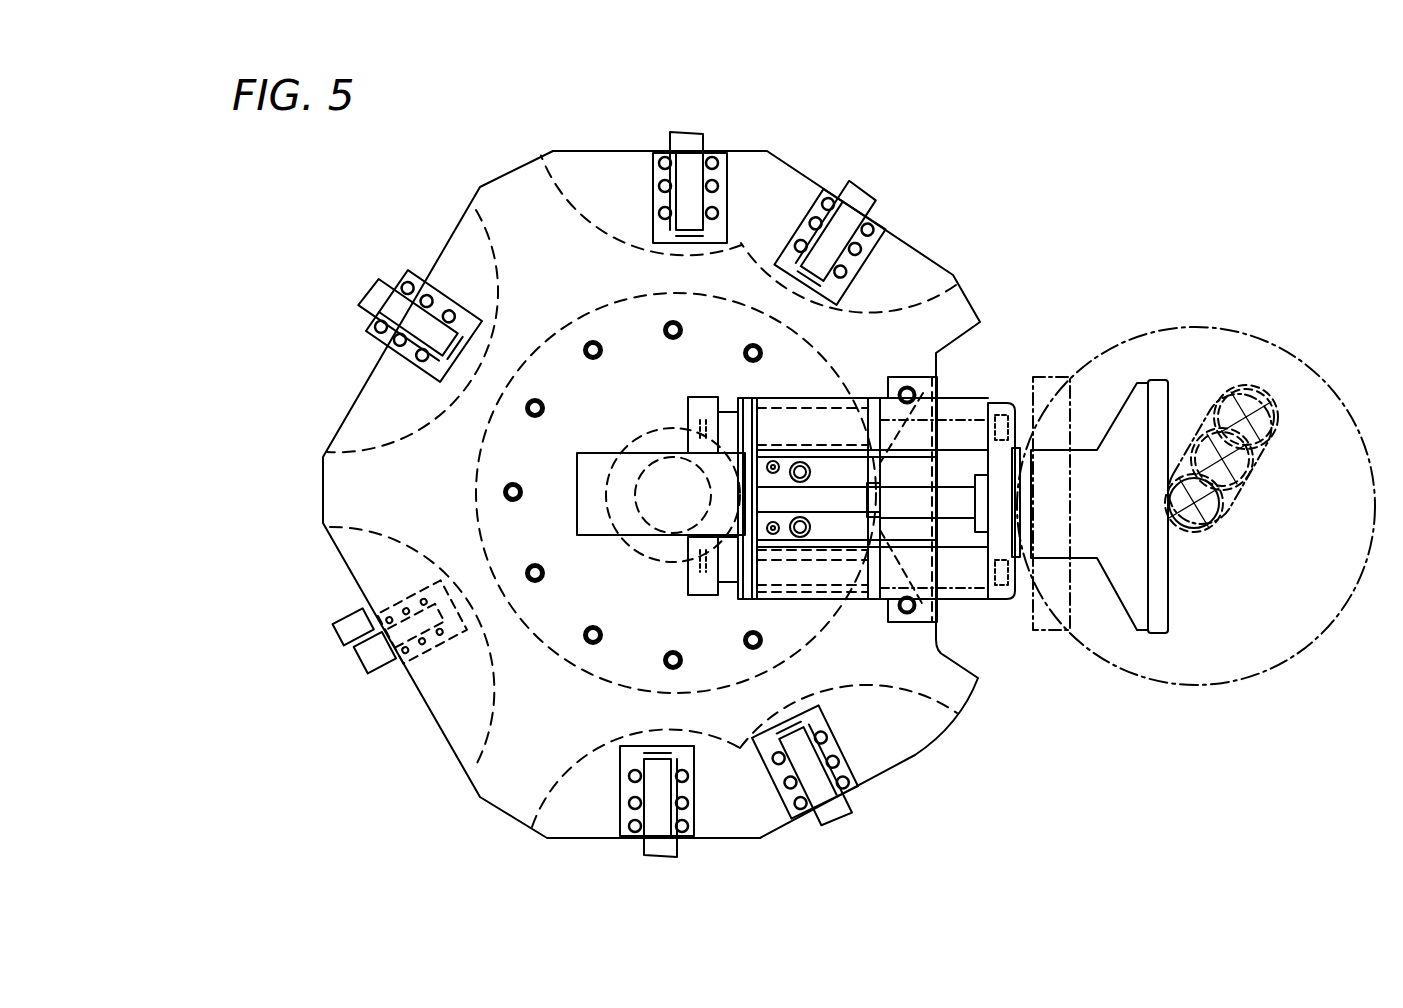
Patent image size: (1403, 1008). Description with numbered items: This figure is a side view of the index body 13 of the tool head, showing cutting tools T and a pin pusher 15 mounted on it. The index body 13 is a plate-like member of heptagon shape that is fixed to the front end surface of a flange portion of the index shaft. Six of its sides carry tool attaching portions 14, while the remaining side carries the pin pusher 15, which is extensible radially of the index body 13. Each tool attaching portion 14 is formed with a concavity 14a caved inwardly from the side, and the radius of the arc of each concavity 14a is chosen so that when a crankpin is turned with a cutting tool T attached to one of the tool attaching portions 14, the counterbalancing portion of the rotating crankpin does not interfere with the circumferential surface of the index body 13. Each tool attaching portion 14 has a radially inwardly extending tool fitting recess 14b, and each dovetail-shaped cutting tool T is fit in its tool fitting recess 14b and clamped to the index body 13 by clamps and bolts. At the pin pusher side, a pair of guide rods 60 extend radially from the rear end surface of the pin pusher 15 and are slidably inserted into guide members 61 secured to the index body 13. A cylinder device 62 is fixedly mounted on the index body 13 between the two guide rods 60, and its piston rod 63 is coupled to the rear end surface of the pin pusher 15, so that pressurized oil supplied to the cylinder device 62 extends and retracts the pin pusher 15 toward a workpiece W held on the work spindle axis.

The index body 13 is at (513, 190).
The tool attaching portions 14 is at (361, 394).
The concavity 14a is at (493, 720).
The tool fitting recess 14b is at (410, 663).
The cutting tool T is at (686, 140).
The guide rods 60 is at (967, 430).
The guide members 61 is at (823, 570).
The cylinder device 62 is at (587, 502).
The piston rod 63 is at (833, 500).
The pin pusher 15 is at (1138, 407).
The workpiece W is at (1325, 430).